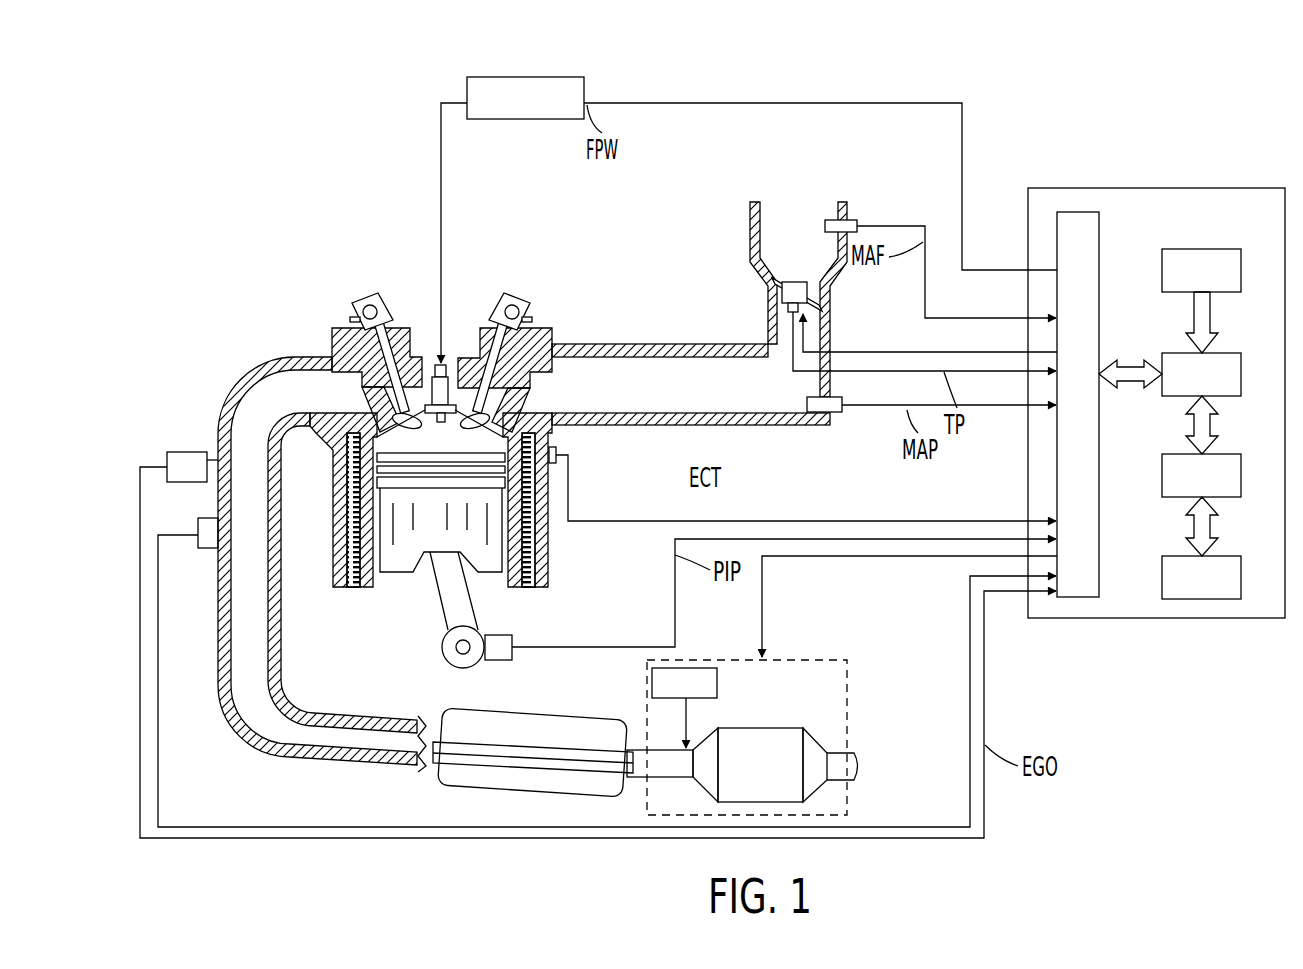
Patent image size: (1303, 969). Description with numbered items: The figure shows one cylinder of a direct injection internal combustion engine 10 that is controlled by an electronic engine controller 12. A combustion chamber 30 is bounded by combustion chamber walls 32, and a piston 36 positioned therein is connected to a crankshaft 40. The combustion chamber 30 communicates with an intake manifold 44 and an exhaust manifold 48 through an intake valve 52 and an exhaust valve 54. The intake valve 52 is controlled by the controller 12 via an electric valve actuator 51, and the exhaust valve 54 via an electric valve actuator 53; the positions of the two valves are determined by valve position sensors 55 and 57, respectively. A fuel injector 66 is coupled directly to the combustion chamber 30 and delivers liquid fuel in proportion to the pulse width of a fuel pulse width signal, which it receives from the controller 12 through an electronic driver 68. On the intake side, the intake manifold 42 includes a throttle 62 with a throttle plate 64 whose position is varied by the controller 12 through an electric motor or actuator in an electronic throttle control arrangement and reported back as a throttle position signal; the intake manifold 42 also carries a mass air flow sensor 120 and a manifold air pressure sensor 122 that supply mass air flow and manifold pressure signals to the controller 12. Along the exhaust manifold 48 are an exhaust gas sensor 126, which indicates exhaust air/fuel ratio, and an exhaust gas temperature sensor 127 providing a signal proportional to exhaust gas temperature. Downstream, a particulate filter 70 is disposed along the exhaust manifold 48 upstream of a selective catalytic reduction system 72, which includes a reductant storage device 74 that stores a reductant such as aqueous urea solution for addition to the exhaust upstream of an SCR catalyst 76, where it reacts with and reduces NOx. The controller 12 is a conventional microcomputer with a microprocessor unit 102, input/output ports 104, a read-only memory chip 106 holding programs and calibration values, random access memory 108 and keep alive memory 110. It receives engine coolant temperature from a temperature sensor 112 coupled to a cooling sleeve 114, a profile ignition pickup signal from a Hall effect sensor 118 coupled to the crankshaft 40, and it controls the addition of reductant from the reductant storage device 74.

The direct injection internal combustion engine 10 is at (270, 284).
The electronic engine controller 12 is at (1230, 188).
The combustion chamber 30 is at (430, 438).
The combustion chamber walls 32 is at (385, 594).
The piston 36 is at (427, 543).
The crankshaft 40 is at (450, 663).
The intake manifold 42 is at (808, 253).
The intake manifold 44 is at (744, 401).
The exhaust manifold 48 is at (283, 415).
The electric valve actuator 51 is at (502, 295).
The intake valve 52 is at (490, 410).
The electric valve actuator 53 is at (380, 295).
The exhaust valve 54 is at (392, 412).
The valve position sensor 55 is at (534, 319).
The valve position sensor 57 is at (350, 319).
The throttle 62 is at (822, 294).
The throttle plate 64 is at (773, 283).
The fuel injector 66 is at (447, 365).
The electronic driver 68 is at (498, 77).
The particulate filter 70 is at (580, 714).
The selective catalytic reduction (SCR) system 72 is at (822, 660).
The reductant storage device 74 is at (695, 668).
The SCR catalyst 76 is at (768, 728).
The microprocessor unit 102 is at (1233, 353).
The input/output ports 104 is at (1100, 235).
The read-only memory chip 106 is at (1216, 249).
The random access memory 108 is at (1233, 454).
The keep alive memory 110 is at (1233, 556).
The temperature sensor 112 is at (558, 463).
The cooling sleeve 114 is at (527, 543).
The Hall effect sensor 118 is at (488, 660).
The mass air flow sensor 120 is at (848, 218).
The manifold air pressure sensor 122 is at (824, 413).
The exhaust gas sensor 126 is at (165, 457).
The exhaust gas temperature sensor 127 is at (197, 523).